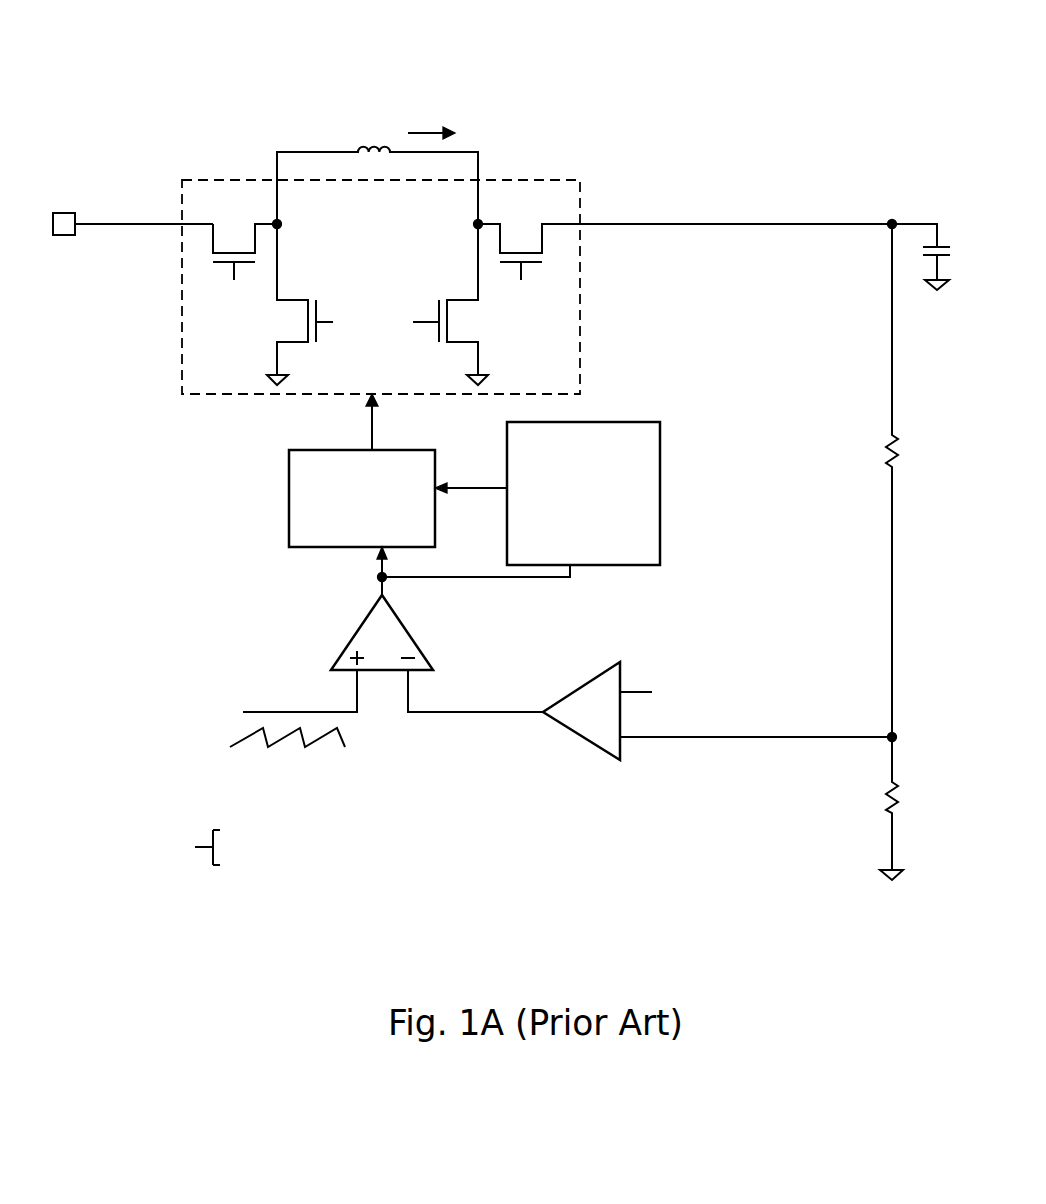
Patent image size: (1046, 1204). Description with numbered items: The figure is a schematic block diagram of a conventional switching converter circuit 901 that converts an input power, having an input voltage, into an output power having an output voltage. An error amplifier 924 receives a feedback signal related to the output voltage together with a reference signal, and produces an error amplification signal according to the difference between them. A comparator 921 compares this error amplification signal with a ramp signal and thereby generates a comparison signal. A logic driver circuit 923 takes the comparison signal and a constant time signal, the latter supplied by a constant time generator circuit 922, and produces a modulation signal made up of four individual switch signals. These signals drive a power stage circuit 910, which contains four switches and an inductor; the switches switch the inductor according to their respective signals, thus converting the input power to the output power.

The conventional switching converter circuit 901 is at (217, 71).
The power stage circuit 910 is at (580, 310).
The comparator 921 is at (420, 645).
The constant time generator circuit 922 is at (583, 493).
The logic driver circuit 923 is at (362, 498).
The error amplifier 924 is at (580, 683).